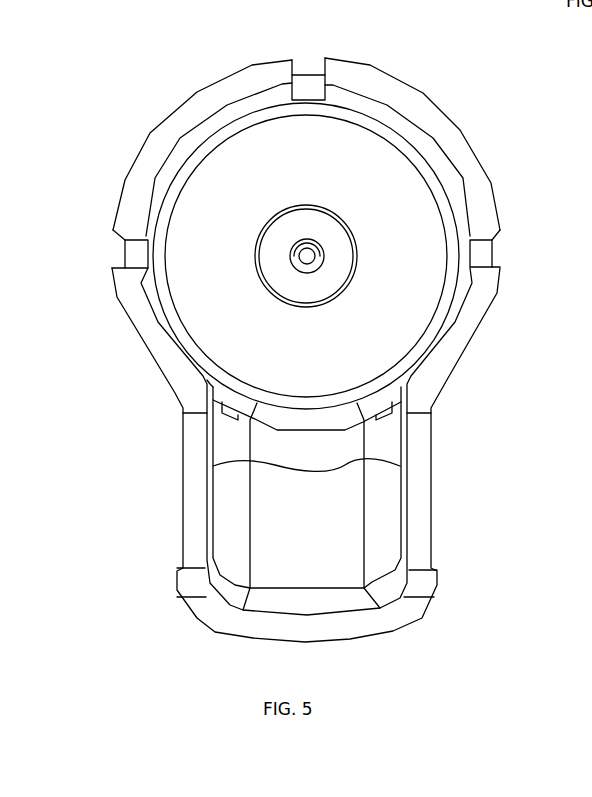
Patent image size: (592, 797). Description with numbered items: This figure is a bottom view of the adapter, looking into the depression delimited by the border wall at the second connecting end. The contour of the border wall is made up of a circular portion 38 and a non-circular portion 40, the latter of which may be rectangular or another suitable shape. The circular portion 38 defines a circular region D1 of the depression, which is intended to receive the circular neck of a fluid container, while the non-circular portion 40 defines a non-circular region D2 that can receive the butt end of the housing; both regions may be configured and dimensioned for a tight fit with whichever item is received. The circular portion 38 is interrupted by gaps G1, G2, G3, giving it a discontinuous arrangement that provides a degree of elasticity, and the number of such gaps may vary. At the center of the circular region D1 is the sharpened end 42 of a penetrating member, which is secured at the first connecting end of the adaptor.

The circular portion 38 is at (457, 145).
The non-circular portion 40 is at (418, 488).
The sharpened end 42 is at (309, 260).
The gap G1 is at (110, 248).
The gap G2 is at (310, 58).
The gap G3 is at (506, 251).
The circular region D1 is at (212, 313).
The non-circular region D2 is at (267, 560).